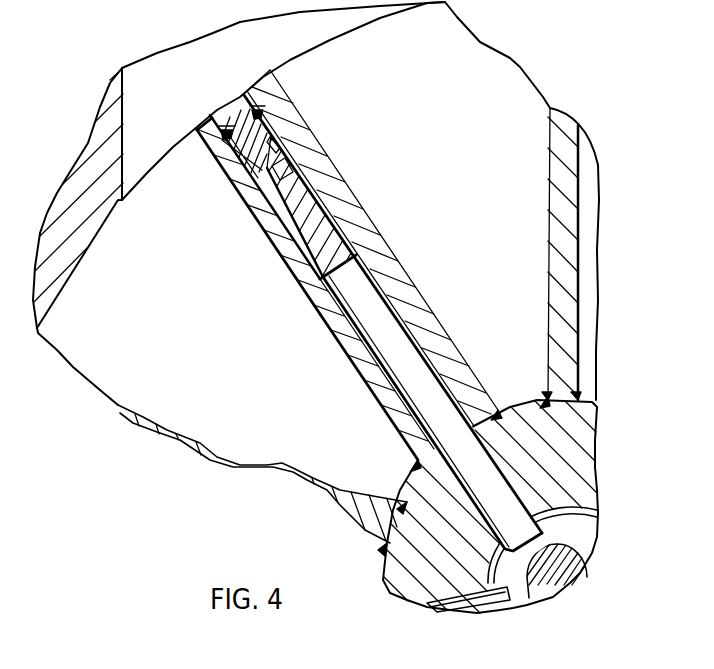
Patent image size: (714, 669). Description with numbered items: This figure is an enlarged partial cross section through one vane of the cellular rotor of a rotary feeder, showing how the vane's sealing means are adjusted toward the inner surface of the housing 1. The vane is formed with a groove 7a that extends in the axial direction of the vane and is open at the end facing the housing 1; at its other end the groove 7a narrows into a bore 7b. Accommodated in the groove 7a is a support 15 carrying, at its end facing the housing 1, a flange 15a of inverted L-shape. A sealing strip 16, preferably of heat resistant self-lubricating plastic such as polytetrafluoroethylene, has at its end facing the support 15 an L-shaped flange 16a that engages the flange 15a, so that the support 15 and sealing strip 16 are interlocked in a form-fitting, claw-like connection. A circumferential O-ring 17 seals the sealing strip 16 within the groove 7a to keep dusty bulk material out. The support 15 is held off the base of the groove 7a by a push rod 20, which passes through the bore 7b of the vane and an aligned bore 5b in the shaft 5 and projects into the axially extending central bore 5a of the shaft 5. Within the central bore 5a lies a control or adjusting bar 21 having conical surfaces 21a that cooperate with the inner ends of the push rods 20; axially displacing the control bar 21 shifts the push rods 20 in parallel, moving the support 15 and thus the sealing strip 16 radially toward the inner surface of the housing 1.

The housing 1 is at (63, 247).
The shaft 5 is at (407, 580).
The central bore 5a is at (580, 513).
The bore 5b is at (400, 310).
The groove 7a is at (300, 248).
The bore 7b is at (370, 353).
The support 15 is at (322, 233).
The flange 15a is at (278, 146).
The sealing strip 16 is at (268, 138).
The flange 16a is at (291, 176).
The O-ring 17 is at (258, 112).
The push rod 20 is at (410, 363).
The control bar 21 is at (560, 563).
The conical surface 21a is at (587, 540).